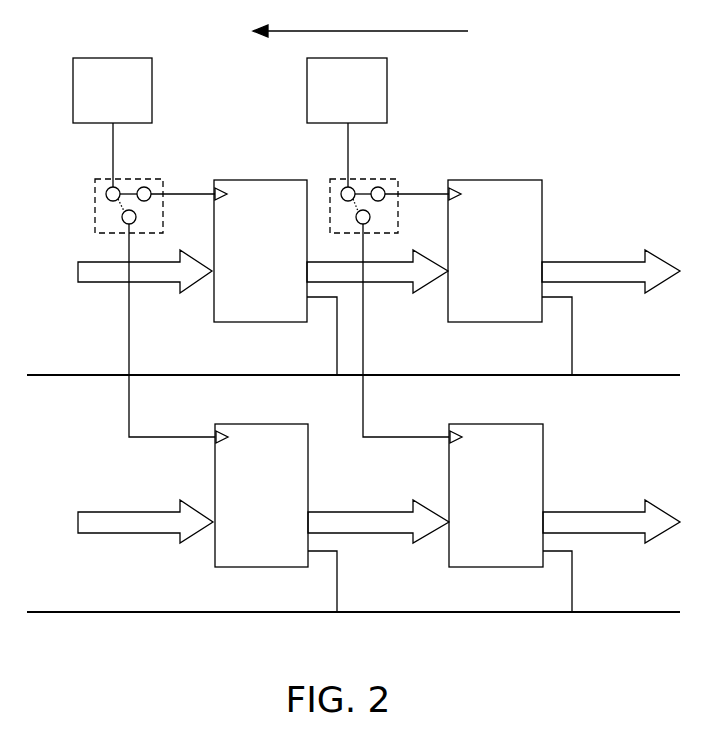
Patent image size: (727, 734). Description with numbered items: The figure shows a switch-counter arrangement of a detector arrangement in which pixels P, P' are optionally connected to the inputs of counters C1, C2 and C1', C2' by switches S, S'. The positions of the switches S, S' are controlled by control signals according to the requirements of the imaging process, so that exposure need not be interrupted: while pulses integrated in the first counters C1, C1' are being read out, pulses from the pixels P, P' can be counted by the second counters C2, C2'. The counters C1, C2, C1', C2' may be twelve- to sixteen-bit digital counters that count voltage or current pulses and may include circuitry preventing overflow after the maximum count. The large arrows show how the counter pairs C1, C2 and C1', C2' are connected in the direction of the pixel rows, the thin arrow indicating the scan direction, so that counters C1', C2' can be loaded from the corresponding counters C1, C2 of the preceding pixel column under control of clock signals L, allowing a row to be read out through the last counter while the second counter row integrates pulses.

The pixel P is at (112, 122).
The pixel P' is at (347, 122).
The switch S is at (155, 282).
The switch S' is at (389, 282).
The first counter C1 is at (250, 277).
The first counter C1' is at (482, 277).
The second counter C2 is at (242, 518).
The second counter C2' is at (475, 518).